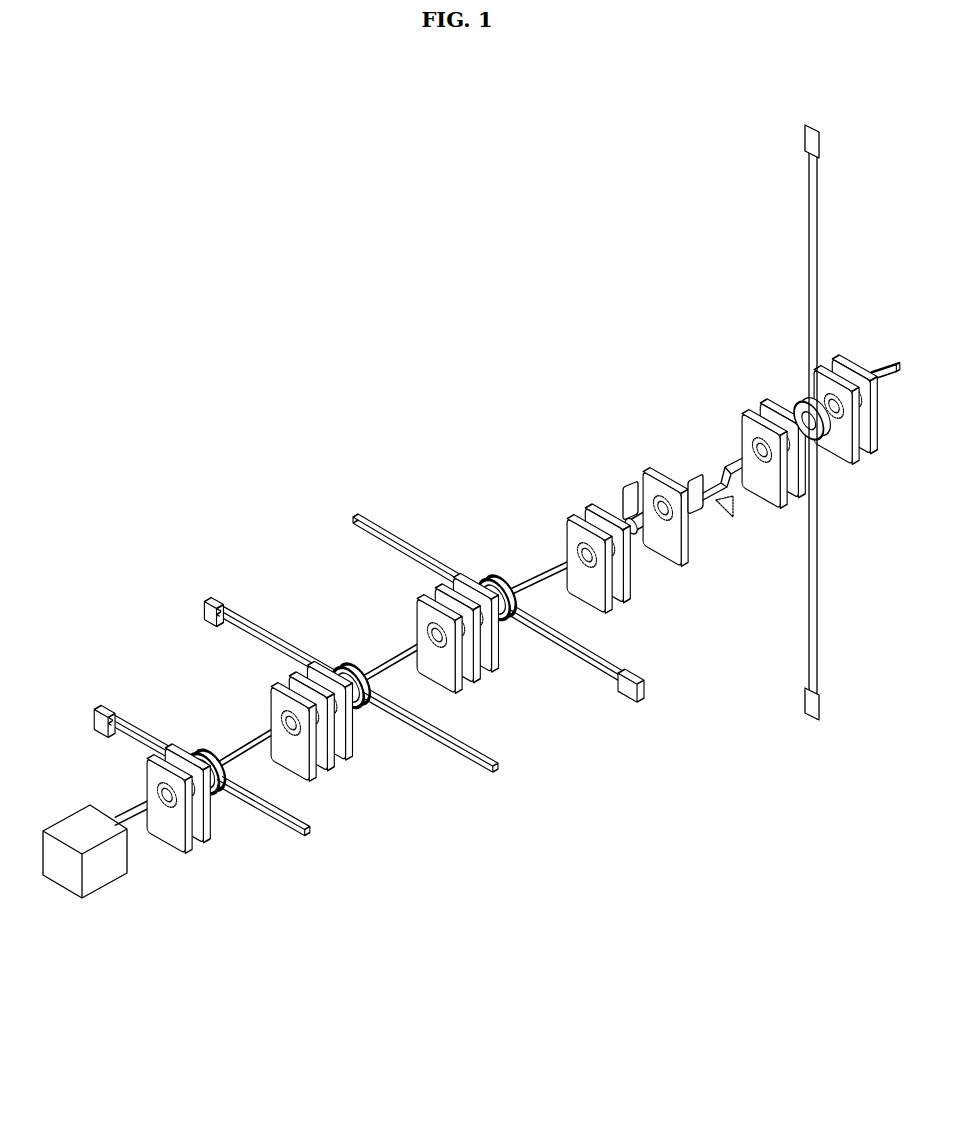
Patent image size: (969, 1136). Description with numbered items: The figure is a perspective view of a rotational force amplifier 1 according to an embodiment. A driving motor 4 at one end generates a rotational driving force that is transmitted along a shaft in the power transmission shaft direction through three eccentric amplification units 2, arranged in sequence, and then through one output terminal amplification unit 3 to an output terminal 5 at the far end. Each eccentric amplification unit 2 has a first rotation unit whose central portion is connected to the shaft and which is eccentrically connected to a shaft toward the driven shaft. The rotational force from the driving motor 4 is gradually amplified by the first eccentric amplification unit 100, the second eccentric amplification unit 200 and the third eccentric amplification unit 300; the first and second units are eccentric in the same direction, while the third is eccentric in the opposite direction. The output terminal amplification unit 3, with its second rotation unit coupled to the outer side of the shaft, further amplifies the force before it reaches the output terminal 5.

The rotational force amplifier 1 is at (905, 118).
The eccentric amplification unit 2 is at (216, 959).
The output terminal amplification unit 3 is at (720, 612).
The driving motor 4 is at (73, 808).
The output terminal 5 is at (890, 368).
The first eccentric amplification unit 100 is at (177, 733).
The second eccentric amplification unit 200 is at (288, 631).
The third eccentric amplification unit 300 is at (443, 534).